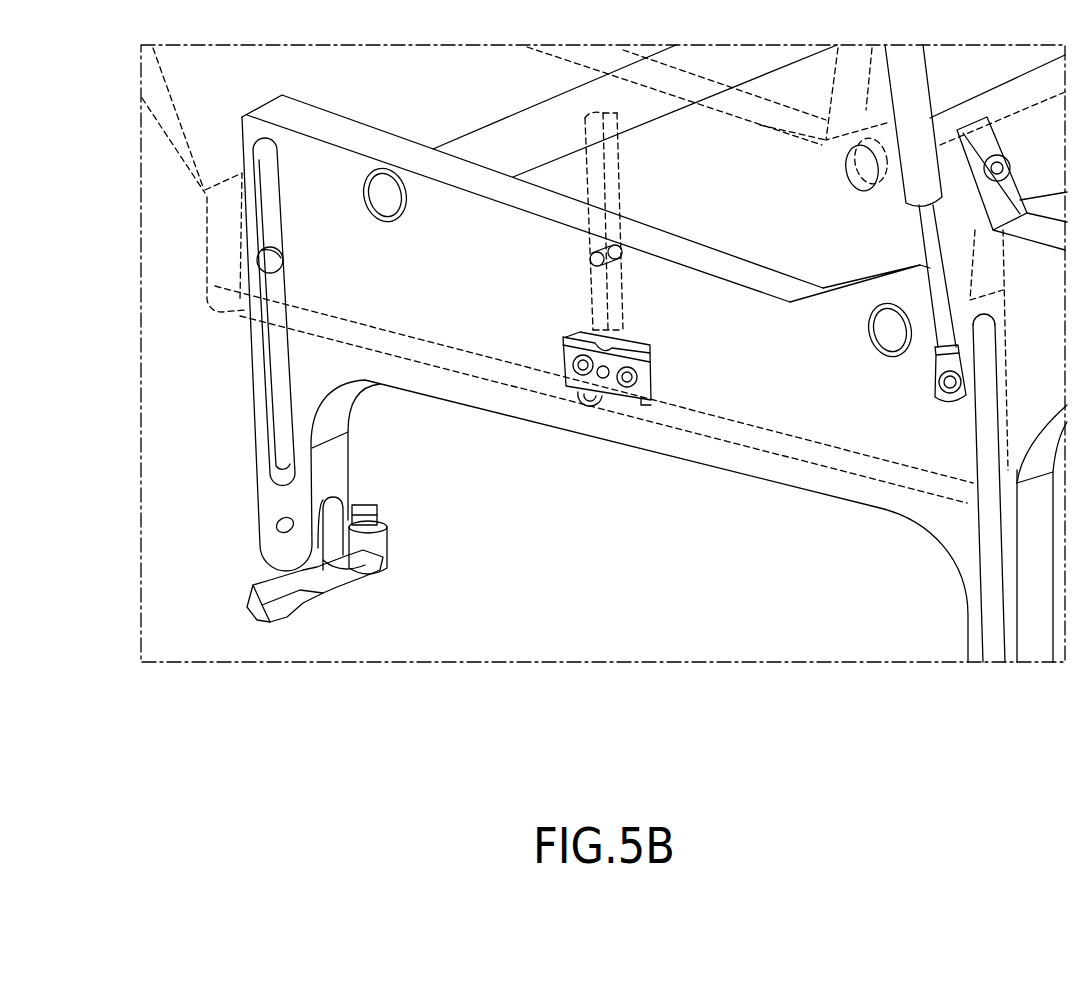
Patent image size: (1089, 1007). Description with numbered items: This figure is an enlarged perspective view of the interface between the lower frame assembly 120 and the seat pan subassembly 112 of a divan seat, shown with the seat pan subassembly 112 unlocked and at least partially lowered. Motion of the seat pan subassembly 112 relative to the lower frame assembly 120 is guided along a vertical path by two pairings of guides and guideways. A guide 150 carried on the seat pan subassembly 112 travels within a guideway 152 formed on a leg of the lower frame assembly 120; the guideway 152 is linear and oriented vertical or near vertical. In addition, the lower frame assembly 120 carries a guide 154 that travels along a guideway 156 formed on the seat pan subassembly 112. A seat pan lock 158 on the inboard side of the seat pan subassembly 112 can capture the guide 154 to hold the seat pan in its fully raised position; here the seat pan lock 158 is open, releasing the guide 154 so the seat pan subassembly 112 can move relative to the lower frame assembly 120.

The seat pan subassembly 112 is at (207, 92).
The lower frame assembly 120 is at (263, 448).
The guide 150 is at (267, 260).
The guideway 152 is at (280, 378).
The guide 154 is at (615, 263).
The guideway 156 is at (594, 158).
The seat pan lock 158 is at (577, 383).